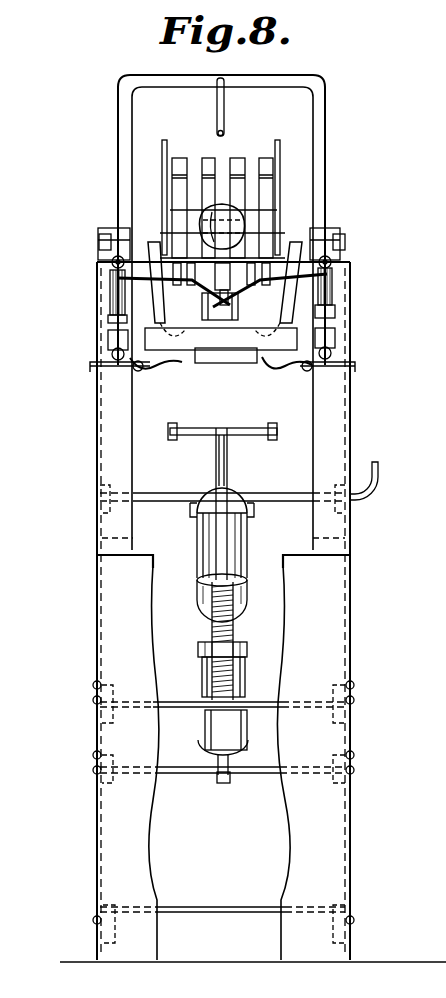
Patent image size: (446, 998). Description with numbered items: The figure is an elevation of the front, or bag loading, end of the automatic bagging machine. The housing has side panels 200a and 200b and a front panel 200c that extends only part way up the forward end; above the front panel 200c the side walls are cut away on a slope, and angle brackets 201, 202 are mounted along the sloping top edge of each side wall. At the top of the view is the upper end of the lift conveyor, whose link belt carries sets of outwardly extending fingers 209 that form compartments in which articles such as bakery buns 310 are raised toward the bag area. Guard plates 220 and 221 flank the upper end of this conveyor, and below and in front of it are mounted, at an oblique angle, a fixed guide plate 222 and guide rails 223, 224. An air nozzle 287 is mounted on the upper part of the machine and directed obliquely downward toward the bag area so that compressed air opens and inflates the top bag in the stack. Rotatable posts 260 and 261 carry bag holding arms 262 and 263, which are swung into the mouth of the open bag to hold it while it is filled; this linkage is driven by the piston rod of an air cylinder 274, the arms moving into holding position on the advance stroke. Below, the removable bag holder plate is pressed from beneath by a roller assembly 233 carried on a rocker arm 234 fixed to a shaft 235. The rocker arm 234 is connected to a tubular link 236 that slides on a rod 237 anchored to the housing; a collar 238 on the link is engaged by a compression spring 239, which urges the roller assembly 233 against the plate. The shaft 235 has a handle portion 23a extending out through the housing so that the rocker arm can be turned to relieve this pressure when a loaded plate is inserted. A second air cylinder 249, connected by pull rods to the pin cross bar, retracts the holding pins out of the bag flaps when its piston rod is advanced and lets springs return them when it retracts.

The air nozzle 287 is at (222, 117).
The guard plate 220 is at (163, 147).
The guard plate 221 is at (280, 140).
The fingers 209 is at (263, 163).
The bakery buns 310 is at (236, 222).
The guide rail 224 is at (300, 252).
The fixed guide plate 222 is at (340, 286).
The rotatable post 260 is at (118, 293).
The guide rail 223 is at (113, 300).
The rotatable post 261 is at (330, 296).
The bag holding arm 263 is at (335, 310).
The bag holding arm 262 is at (198, 296).
The roller assembly 233 is at (268, 425).
The rocker arm 234 is at (215, 462).
The shaft 235 is at (277, 493).
The hook 23a is at (380, 468).
The air cylinder 274 is at (212, 537).
The tubular link 236 is at (223, 557).
The collar 238 is at (248, 590).
The compression spring 239 is at (228, 632).
The rod 237 is at (244, 672).
The air cylinder 249 is at (210, 720).
The angle bracket 201 is at (107, 443).
The angle bracket 202 is at (335, 428).
The side panel 200a is at (97, 643).
The side panel 200b is at (350, 636).
The front panel 200c is at (328, 822).